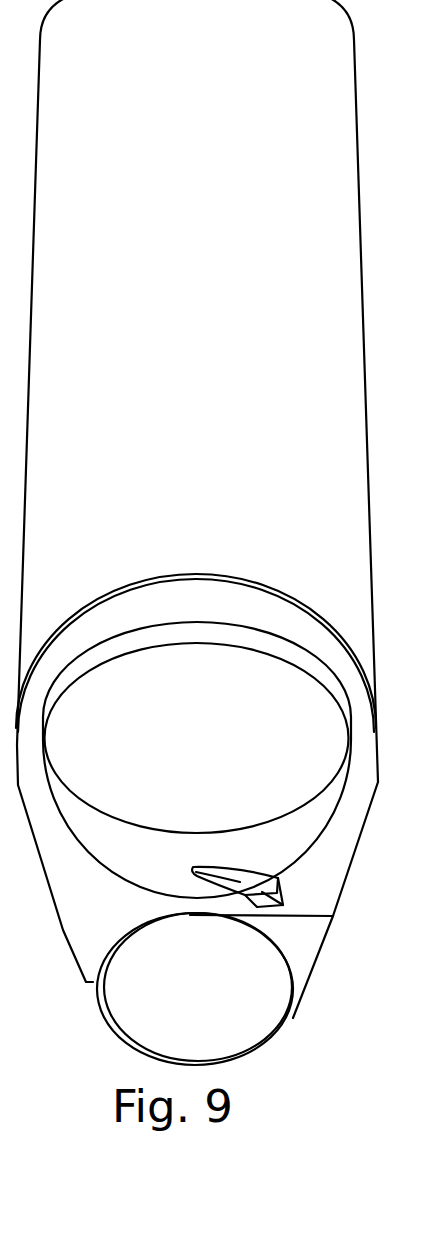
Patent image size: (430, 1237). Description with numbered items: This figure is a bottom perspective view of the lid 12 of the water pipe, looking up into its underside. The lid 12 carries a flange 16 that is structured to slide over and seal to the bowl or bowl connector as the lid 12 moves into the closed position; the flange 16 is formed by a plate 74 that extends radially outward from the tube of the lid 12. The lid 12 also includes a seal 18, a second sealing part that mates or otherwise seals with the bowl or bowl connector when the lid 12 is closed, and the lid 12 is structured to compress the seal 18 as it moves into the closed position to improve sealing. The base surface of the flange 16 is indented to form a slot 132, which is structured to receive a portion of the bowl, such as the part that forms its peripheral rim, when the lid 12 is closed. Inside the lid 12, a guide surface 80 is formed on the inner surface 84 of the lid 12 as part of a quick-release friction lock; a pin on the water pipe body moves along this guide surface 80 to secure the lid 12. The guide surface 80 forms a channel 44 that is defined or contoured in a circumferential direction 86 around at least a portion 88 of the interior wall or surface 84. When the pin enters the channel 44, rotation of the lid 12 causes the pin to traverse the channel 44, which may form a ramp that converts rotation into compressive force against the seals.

The lid 12 is at (365, 359).
The flange 16 is at (338, 858).
The seal 18 is at (227, 1047).
The channel 44 is at (275, 913).
The plate 74 is at (73, 892).
The guide surface 80 is at (231, 830).
The inner surface 84 is at (219, 850).
The circumferential direction 86 is at (252, 870).
The portion 88 is at (242, 855).
The slot 132 is at (310, 980).